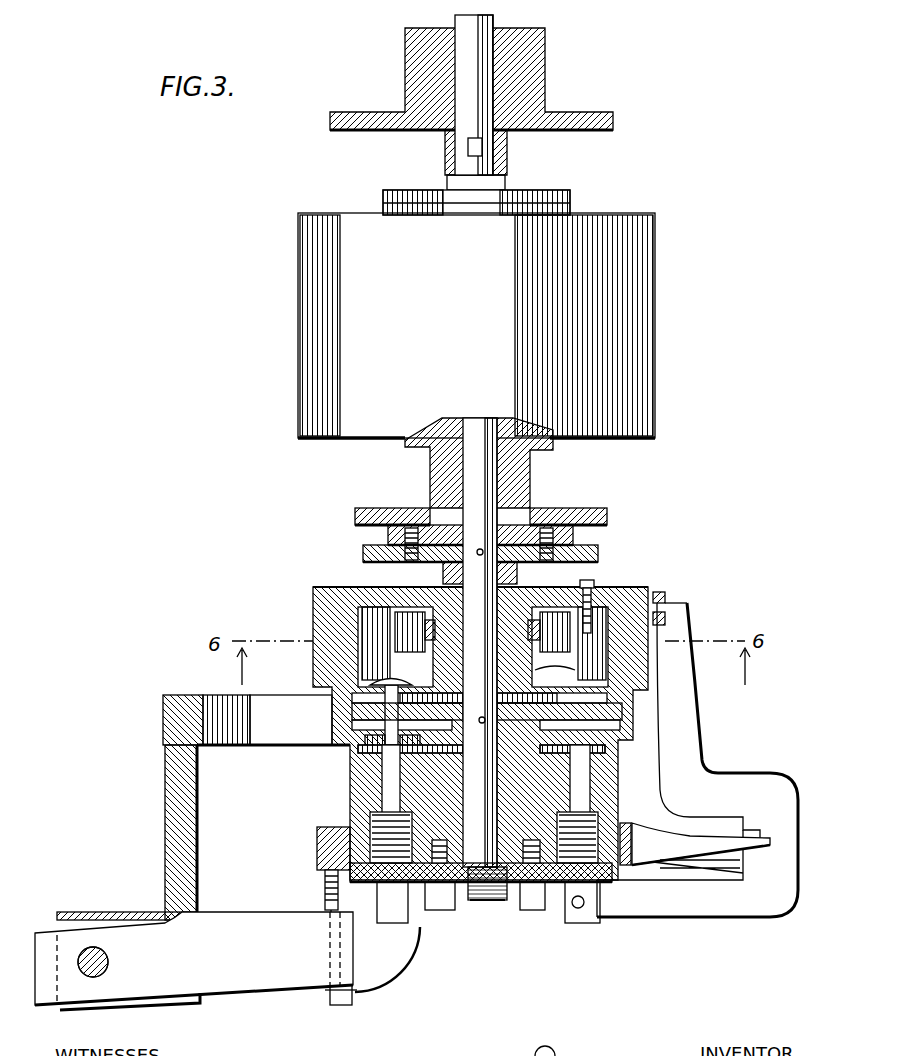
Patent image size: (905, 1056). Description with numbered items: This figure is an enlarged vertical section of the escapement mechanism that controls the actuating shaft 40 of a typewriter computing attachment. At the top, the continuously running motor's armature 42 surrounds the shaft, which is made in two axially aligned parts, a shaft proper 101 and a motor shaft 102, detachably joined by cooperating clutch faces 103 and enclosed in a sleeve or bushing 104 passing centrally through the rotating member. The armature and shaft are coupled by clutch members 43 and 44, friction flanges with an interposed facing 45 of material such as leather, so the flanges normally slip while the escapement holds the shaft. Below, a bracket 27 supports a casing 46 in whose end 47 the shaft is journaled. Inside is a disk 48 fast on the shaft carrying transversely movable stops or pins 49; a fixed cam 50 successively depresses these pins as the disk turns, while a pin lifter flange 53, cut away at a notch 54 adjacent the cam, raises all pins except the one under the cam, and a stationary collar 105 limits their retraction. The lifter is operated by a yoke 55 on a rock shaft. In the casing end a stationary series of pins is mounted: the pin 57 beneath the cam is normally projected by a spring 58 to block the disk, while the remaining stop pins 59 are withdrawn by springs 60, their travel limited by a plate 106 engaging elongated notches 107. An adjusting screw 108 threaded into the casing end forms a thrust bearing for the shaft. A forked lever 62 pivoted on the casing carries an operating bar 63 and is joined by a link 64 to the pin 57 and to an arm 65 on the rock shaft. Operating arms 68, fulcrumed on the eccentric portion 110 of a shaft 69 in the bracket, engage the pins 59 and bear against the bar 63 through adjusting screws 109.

The actuating shaft 40 is at (468, 113).
The shaft proper 101 is at (477, 62).
The clutch faces 103 is at (482, 145).
The sleeve or bushing 104 is at (505, 168).
The armature 42 is at (476, 325).
The motor shaft 102 is at (465, 477).
The clutch member 43 is at (578, 510).
The facing 45 is at (577, 540).
The clutch member 44 is at (598, 548).
The yoke 55 is at (398, 600).
The bracket 27 is at (180, 807).
The stop pin 57 is at (410, 640).
The stationary collar 105 is at (420, 655).
The notch 54 is at (568, 682).
The fixed cam 50 is at (582, 632).
The flange 53 is at (383, 683).
The stops or pins 49 is at (390, 708).
The disk 48 is at (375, 737).
The casing 46 is at (350, 758).
The stop pins 59 is at (392, 793).
The springs 60 is at (370, 822).
The end of casing 47 is at (517, 893).
The elongated notches 107 is at (466, 895).
The adjusting screw 108 is at (480, 900).
The plate 106 is at (543, 893).
The operating bar 63 is at (317, 853).
The adjusting screw 109 is at (352, 1000).
The operating arms 68 is at (286, 975).
The shaft 69 is at (98, 978).
The eccentric portion 110 is at (92, 950).
The link 64 is at (770, 788).
The forked lever 62 is at (657, 866).
The spring 58 is at (606, 815).
The arm 65 is at (666, 596).